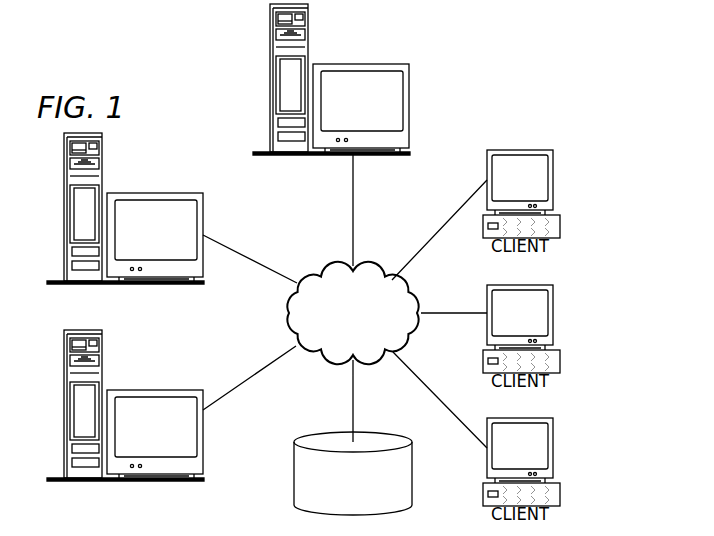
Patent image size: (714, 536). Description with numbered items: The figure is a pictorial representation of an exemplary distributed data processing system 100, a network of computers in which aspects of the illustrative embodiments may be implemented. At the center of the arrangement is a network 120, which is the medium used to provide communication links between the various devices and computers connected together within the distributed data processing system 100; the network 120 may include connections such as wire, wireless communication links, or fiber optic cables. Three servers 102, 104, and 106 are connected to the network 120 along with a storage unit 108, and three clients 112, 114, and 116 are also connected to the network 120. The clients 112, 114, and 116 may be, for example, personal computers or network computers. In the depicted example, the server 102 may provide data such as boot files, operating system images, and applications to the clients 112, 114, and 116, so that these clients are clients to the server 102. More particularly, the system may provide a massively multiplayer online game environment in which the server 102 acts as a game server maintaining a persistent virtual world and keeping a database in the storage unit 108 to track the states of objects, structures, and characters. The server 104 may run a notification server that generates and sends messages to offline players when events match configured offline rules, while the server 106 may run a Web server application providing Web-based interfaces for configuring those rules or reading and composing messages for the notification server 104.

The distributed data processing system 100 is at (472, 107).
The server 102 is at (268, 78).
The server 104 is at (62, 207).
The server 106 is at (62, 400).
The storage unit 108 is at (292, 481).
The client 112 is at (556, 181).
The client 114 is at (556, 315).
The client 116 is at (556, 450).
The network 120 is at (327, 268).